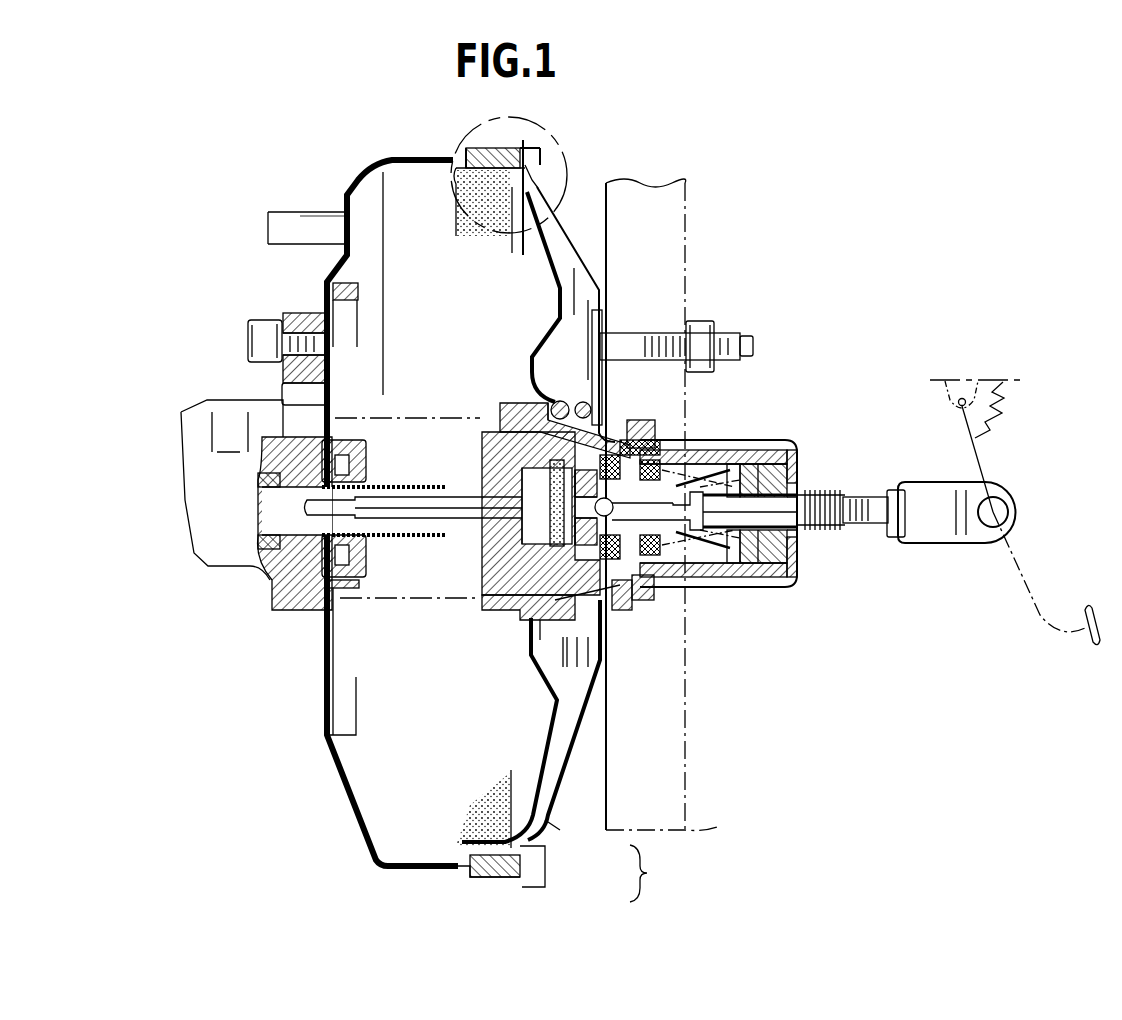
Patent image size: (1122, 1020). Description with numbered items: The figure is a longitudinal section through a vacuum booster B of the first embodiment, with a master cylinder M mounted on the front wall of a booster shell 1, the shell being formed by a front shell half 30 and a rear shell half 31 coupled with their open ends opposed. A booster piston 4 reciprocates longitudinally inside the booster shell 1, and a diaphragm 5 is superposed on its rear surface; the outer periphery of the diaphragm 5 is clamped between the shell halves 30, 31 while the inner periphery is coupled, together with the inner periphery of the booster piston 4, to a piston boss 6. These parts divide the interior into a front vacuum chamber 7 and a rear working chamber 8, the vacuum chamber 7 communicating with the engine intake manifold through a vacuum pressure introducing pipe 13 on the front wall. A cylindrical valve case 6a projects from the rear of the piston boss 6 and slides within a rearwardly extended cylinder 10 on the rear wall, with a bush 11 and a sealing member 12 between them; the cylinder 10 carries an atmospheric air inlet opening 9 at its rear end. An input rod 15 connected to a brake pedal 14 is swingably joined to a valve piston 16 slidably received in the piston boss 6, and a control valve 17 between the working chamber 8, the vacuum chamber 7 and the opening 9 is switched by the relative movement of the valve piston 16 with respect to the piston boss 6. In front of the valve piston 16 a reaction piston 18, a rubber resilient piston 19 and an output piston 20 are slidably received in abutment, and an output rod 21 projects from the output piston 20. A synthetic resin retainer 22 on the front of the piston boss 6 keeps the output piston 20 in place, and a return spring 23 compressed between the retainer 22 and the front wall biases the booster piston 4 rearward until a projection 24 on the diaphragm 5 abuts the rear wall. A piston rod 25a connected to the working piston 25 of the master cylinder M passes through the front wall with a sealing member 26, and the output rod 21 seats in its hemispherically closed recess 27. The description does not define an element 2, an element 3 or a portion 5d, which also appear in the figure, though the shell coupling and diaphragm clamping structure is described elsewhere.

The booster shell 1 is at (648, 873).
The bead portion 2 is at (485, 237).
The vehicle partition plate 3 is at (600, 232).
The booster piston 4 is at (540, 258).
The diaphragm 5 is at (580, 308).
The seal bead 5d is at (525, 162).
The piston boss 6 is at (532, 630).
The valve case 6a is at (742, 565).
The vacuum chamber 7 is at (428, 738).
The working chamber 8 is at (585, 668).
The atmospheric air inlet opening 9 is at (800, 485).
The rearwardly extended cylinder 10 is at (748, 440).
The bush 11 is at (626, 612).
The sealing member 12 is at (645, 600).
The vacuum pressure introducing pipe 13 is at (300, 213).
The brake pedal 14 is at (1082, 638).
The input rod 15 is at (870, 528).
The valve piston 16 is at (618, 440).
The control valve 17 is at (690, 455).
The reaction piston 18 is at (570, 455).
The resilient piston 19 is at (500, 578).
The output piston 20 is at (515, 458).
The output rod 21 is at (425, 520).
The retainer 22 is at (515, 405).
The return spring 23 is at (345, 440).
The projection 24 is at (575, 282).
The working piston 25 is at (268, 568).
The piston rod 25a is at (415, 485).
The sealing member 26 is at (366, 458).
The recess 27 is at (390, 537).
The front shell half 30 is at (458, 870).
The rear shell half 31 is at (556, 818).
The vacuum booster B is at (650, 420).
The master cylinder M is at (208, 572).